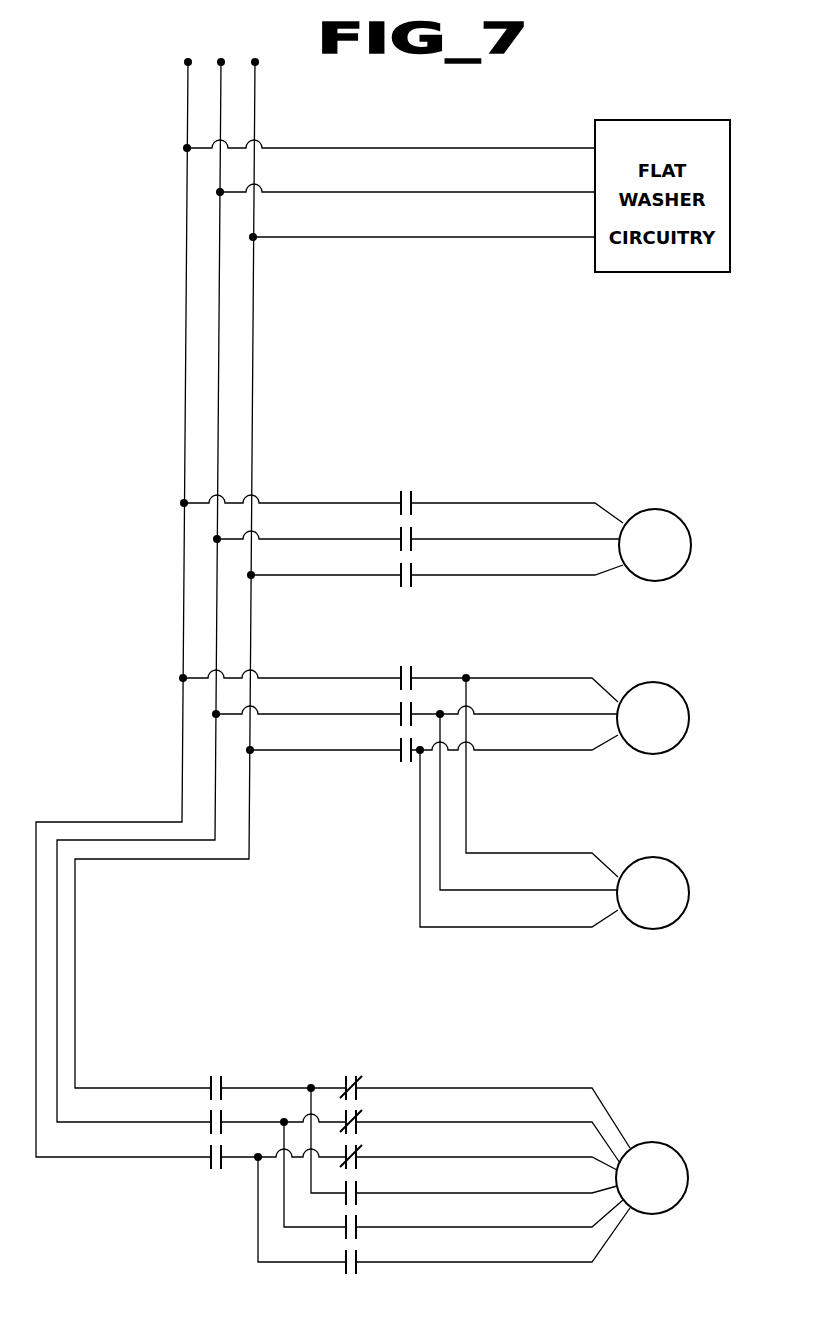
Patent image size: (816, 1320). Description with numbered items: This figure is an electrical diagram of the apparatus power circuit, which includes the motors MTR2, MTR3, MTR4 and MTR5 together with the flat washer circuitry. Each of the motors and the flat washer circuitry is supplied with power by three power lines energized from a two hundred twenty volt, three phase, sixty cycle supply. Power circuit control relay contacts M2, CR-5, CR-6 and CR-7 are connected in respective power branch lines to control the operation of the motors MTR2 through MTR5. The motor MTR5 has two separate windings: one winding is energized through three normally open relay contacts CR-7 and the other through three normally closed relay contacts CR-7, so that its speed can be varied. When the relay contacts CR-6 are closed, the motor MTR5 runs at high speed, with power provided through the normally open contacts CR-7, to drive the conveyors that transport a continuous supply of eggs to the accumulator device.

The power circuit control relay contacts M2 is at (400, 572).
The power circuit control relay contacts CR-5 is at (400, 748).
The relay contacts CR-6 is at (210, 1153).
The relay contacts CR-7 is at (345, 1260).
The motor MTR2 is at (632, 556).
The motor MTR3 is at (630, 729).
The motor MTR4 is at (630, 904).
The motor MTR5 is at (629, 1189).